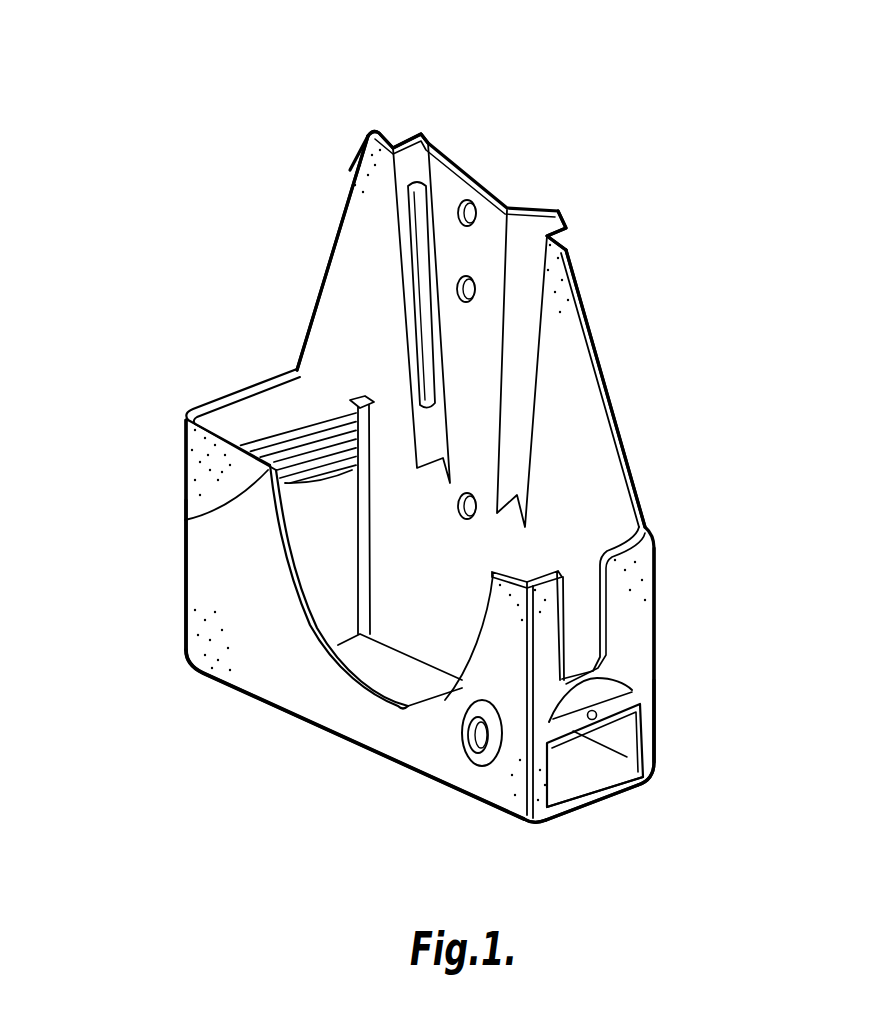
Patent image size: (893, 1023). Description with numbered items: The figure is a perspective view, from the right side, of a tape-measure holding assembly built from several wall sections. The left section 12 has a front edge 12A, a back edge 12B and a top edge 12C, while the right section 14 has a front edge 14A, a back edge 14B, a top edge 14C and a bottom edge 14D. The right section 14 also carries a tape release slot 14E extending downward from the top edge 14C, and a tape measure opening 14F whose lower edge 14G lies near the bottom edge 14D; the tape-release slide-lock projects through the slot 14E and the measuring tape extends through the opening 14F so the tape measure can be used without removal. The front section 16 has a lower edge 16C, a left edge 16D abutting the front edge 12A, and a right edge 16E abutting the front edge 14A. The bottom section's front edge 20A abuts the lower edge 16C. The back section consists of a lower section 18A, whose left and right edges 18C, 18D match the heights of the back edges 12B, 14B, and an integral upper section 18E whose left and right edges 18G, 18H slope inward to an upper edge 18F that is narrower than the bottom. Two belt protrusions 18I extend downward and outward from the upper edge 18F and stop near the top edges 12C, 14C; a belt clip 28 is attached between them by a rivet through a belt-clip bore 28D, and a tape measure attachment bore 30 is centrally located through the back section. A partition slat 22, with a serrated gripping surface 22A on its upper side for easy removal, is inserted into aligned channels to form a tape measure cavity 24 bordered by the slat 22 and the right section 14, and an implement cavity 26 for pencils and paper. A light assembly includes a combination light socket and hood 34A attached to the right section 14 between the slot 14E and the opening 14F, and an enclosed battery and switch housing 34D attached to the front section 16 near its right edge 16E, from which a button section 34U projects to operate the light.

The left section 12 is at (277, 400).
The front edge 12A is at (154, 535).
The back edge 12B is at (281, 253).
The top edge 12C is at (237, 388).
The right section 14 is at (637, 668).
The front edge 14A is at (450, 837).
The back edge 14B is at (657, 582).
The top edge 14C is at (653, 540).
The bottom edge 14D is at (580, 807).
The tape release slot 14E is at (580, 633).
The tape measure opening 14F is at (647, 753).
The lower edge 14G is at (640, 782).
The front section 16 is at (187, 657).
The lower edge 16C is at (278, 734).
The left edge 16D is at (183, 454).
The right edge 16E is at (507, 797).
The lower section 18A is at (237, 627).
The left edge 18C is at (297, 343).
The right edge 18D is at (643, 710).
The upper section 18E is at (580, 387).
The upper edge 18F is at (388, 147).
The left edge 18G is at (347, 162).
The right edge 18H is at (607, 347).
The belt protrusions 18I is at (432, 150).
The front edge 20A is at (230, 680).
The partition slat 22 is at (303, 527).
The gripping surface 22A is at (185, 520).
The tape measure cavity 24 is at (578, 600).
The implement cavity 26 is at (237, 430).
The belt clip 28 is at (421, 295).
The belt-clip bore 28D is at (475, 213).
The tape measure attachment bore 30 is at (475, 503).
The combination light socket and hood 34A is at (633, 688).
The enclosed battery and switch housing 34D is at (487, 755).
The button section 34U is at (463, 725).